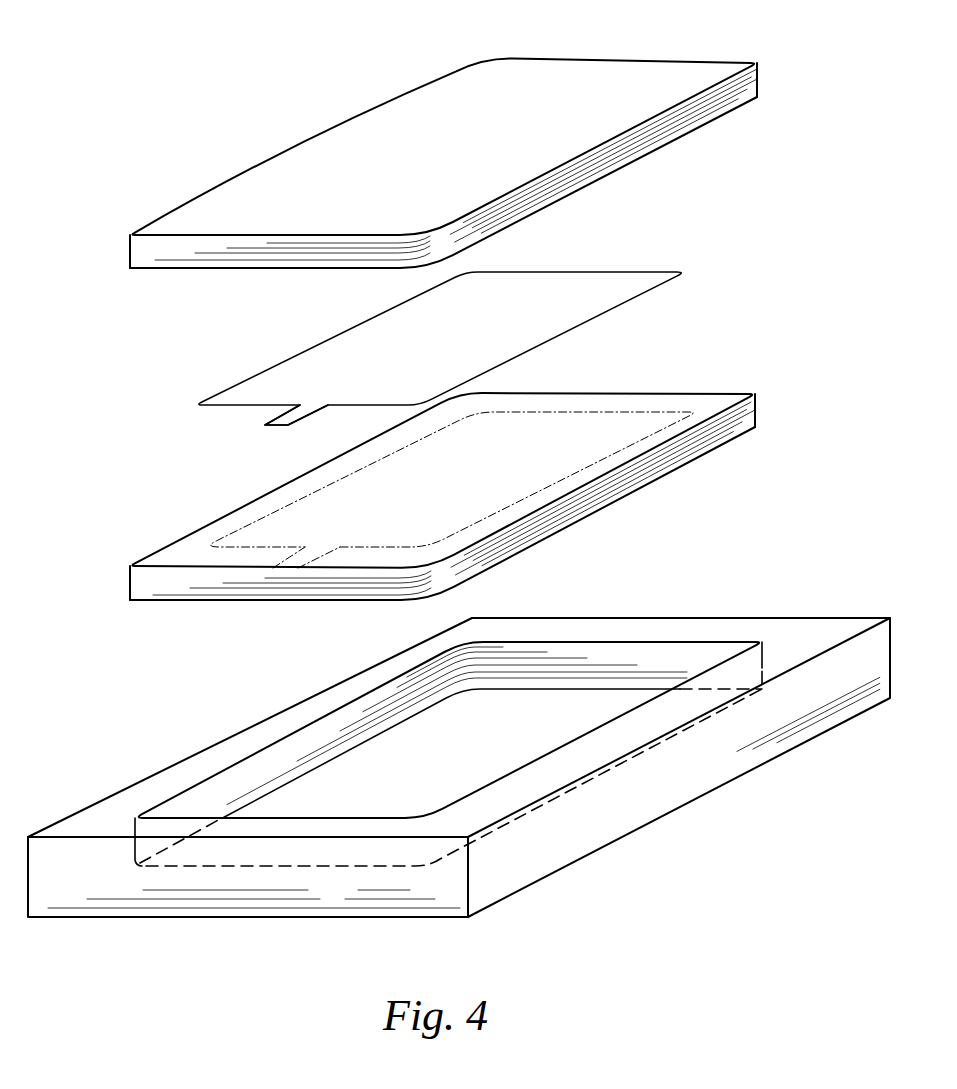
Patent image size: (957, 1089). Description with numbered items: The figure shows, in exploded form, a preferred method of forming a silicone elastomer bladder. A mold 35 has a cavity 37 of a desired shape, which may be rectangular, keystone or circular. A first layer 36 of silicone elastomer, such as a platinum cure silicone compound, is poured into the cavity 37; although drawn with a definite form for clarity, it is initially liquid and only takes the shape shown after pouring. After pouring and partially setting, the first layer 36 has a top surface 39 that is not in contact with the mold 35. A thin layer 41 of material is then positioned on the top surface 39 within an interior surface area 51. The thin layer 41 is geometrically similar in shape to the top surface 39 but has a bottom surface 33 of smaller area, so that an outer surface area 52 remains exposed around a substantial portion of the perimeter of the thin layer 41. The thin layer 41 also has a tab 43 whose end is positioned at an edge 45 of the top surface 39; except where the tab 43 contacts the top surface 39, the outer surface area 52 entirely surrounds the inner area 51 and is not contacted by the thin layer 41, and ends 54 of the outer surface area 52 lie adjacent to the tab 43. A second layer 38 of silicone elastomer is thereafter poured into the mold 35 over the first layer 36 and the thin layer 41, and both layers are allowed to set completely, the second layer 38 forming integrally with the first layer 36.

The bottom surface 33 is at (497, 315).
The mold 35 is at (840, 625).
The first layer 36 is at (758, 413).
The cavity 37 is at (507, 727).
The second layer 38 is at (765, 74).
The top surface 39 is at (732, 397).
The thin layer 41 is at (693, 272).
The tab 43 is at (267, 425).
The edge 45 is at (160, 566).
The interior surface area 51 is at (442, 492).
The outer surface area 52 is at (612, 395).
The ends 54 is at (273, 557).